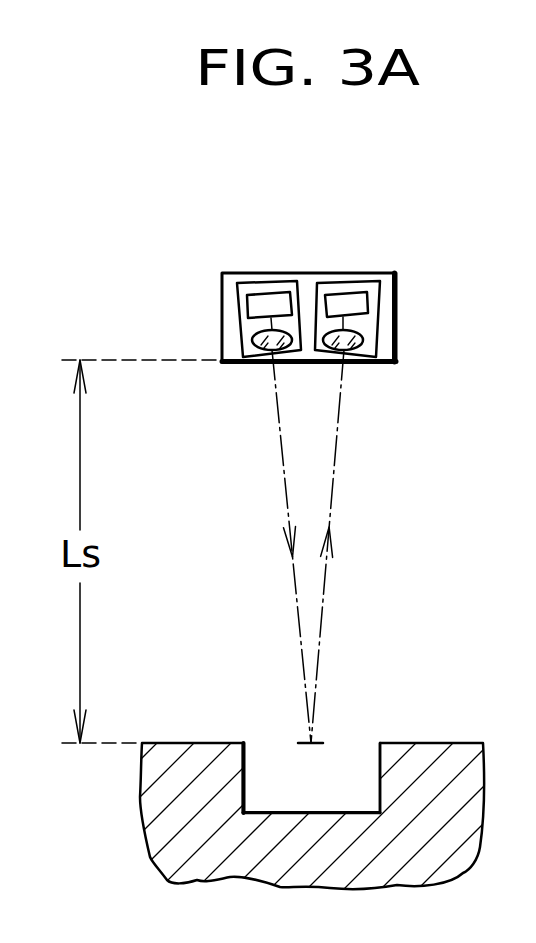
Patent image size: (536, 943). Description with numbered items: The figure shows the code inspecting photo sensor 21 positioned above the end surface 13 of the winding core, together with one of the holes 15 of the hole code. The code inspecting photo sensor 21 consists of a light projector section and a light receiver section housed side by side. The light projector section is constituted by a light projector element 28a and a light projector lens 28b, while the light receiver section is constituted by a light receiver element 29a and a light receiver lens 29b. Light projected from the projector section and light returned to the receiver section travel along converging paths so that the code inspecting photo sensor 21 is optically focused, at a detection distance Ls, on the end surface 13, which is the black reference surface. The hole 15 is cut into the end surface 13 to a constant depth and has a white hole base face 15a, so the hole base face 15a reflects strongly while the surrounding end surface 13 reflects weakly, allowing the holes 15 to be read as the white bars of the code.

The code inspecting photo sensor 21 is at (307, 273).
The light projector element 28a is at (240, 303).
The light projector lens 28b is at (242, 340).
The light receiver element 29a is at (380, 306).
The light receiver lens 29b is at (380, 341).
The end surface 13 is at (440, 743).
The hole 15 is at (255, 742).
The hole base face 15a is at (340, 812).